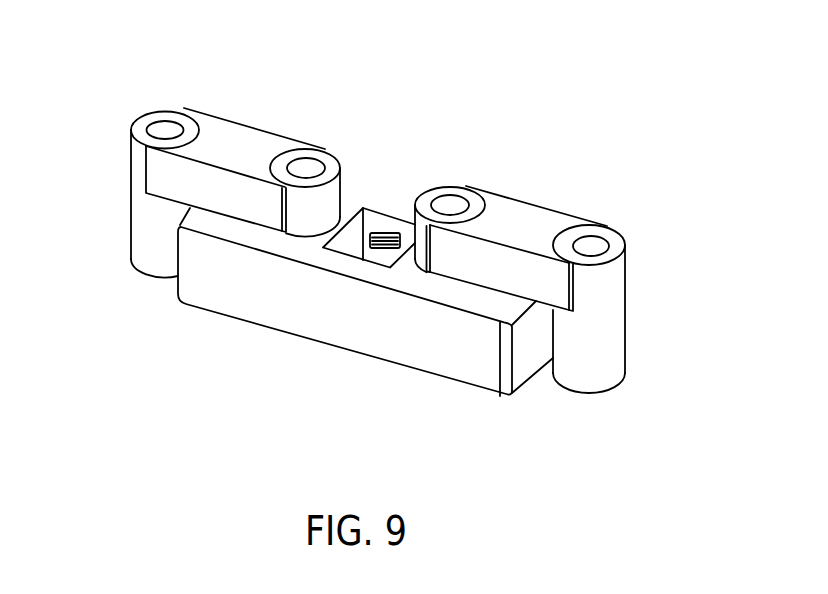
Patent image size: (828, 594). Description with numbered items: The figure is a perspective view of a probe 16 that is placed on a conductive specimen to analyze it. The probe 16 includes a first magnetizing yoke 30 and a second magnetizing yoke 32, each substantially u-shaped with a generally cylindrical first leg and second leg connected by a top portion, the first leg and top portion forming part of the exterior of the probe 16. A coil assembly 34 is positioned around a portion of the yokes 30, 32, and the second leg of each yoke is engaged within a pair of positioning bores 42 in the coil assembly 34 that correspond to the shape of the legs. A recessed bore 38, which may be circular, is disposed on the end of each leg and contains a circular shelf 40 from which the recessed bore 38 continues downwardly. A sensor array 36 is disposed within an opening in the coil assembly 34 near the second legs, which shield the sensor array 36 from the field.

The probe 16 is at (517, 146).
The first magnetizing yoke 30 is at (128, 169).
The second magnetizing yoke 32 is at (627, 286).
The coil assembly 34 is at (277, 310).
The sensor array 36 is at (382, 232).
The recessed bore 38 is at (602, 249).
The shelf 40 is at (171, 132).
The positioning bores 42 is at (407, 237).